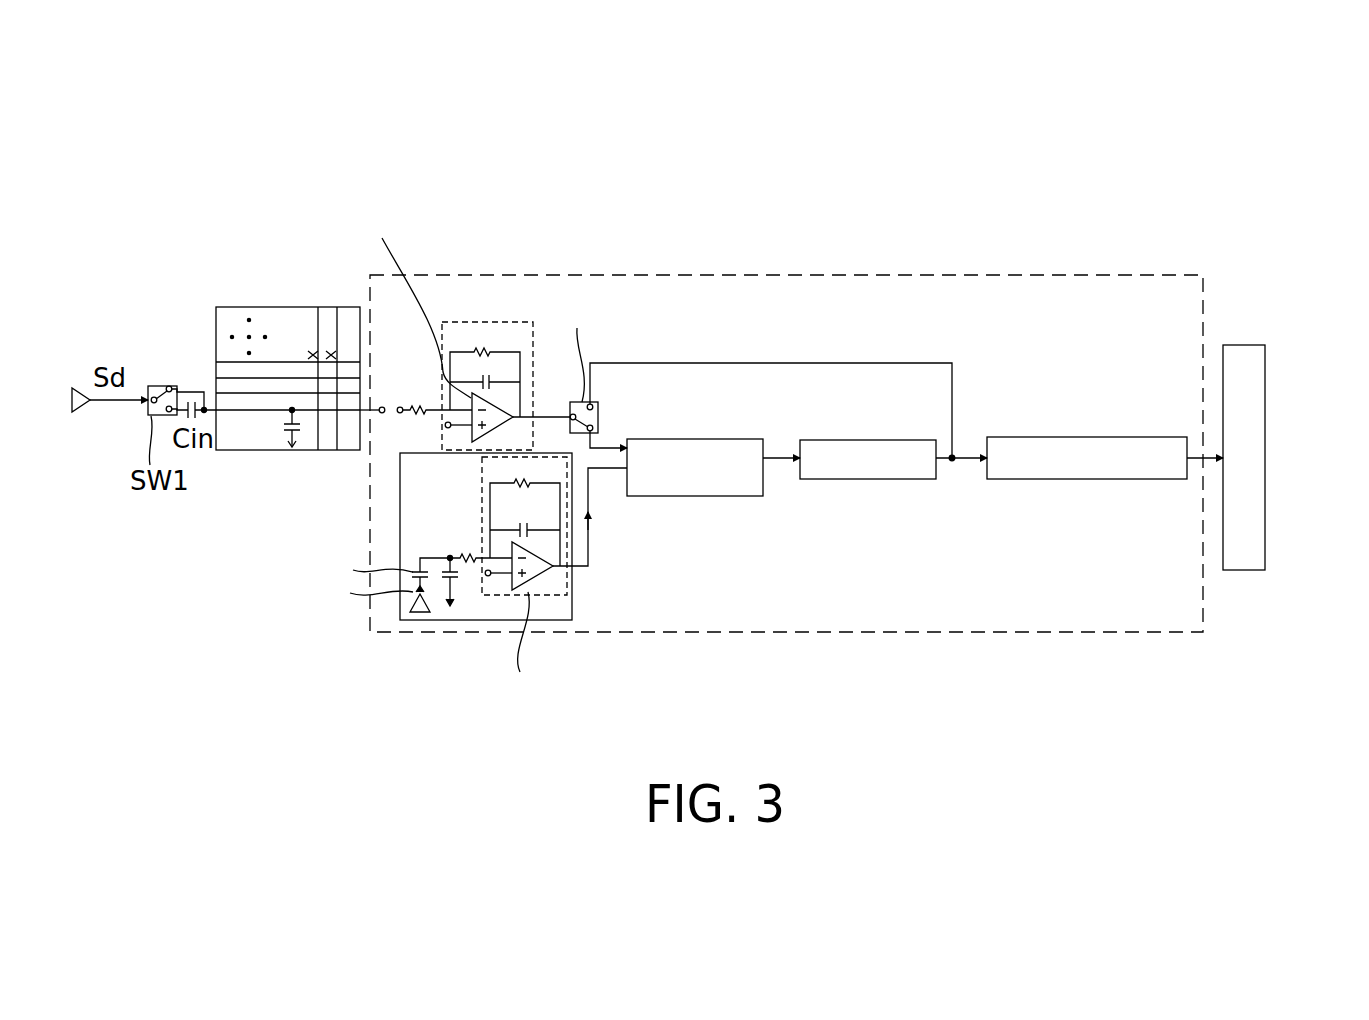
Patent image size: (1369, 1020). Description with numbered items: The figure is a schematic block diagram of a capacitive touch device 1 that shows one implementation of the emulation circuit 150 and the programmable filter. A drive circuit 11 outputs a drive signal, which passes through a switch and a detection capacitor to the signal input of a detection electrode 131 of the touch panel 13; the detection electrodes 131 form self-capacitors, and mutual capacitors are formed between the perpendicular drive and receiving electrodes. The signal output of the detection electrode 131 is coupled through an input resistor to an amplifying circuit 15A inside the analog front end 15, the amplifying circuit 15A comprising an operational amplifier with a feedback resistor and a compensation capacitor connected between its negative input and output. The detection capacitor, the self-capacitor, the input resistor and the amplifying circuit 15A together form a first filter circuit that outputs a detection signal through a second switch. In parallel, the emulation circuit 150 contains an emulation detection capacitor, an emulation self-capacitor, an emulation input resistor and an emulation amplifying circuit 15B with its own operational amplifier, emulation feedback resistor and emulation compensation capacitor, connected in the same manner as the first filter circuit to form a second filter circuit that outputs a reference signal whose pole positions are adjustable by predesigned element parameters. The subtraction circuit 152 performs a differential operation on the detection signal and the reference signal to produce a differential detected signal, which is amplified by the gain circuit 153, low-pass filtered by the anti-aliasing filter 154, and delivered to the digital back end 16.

The capacitive touch device 1 is at (137, 77).
The drive circuit 11 is at (82, 413).
The touch panel 13 is at (254, 365).
The detection electrodes 131 is at (237, 362).
The analog front end 15 is at (630, 275).
The amplifying circuit 15A is at (477, 322).
The emulation amplifying circuit 15B is at (560, 596).
The emulation circuit 150 is at (525, 576).
The subtraction circuit 152 is at (706, 439).
The gain circuit 153 is at (826, 440).
The anti-aliasing filter 154 is at (1055, 437).
The digital back end 16 is at (1265, 458).